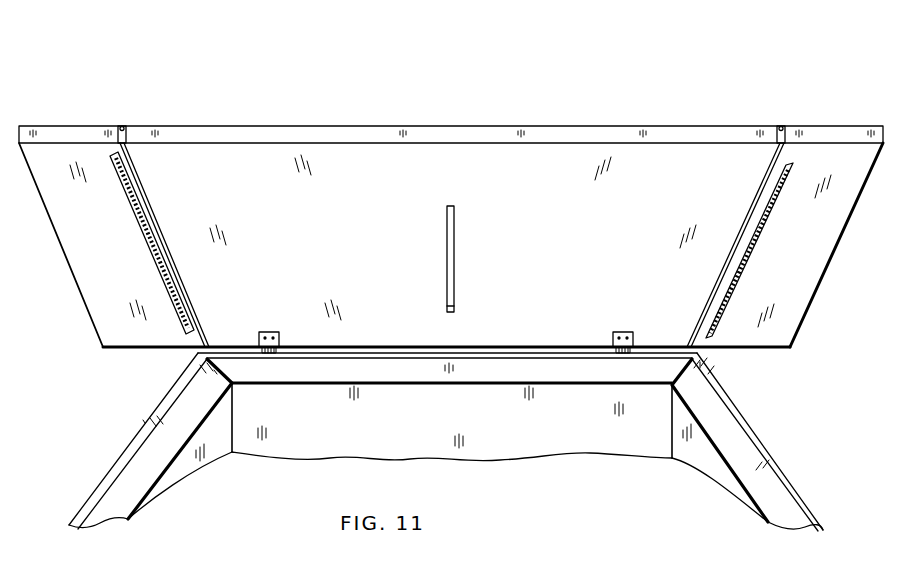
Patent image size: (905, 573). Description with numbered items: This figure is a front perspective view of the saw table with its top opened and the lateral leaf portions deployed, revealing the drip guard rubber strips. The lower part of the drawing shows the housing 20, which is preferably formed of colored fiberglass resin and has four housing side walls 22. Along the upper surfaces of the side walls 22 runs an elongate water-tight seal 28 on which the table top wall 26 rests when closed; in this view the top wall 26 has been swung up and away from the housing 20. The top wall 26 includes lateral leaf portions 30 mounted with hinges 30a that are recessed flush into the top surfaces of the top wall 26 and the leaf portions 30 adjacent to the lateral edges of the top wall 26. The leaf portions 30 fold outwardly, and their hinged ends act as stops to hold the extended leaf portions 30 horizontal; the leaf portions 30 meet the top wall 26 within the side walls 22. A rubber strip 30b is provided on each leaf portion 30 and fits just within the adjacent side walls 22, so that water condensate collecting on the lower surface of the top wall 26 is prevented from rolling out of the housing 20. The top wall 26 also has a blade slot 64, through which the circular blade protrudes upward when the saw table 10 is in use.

The display case 10 is at (142, 72).
The housing 20 is at (598, 444).
The housing side walls 22 is at (155, 432).
The table top wall 26 is at (325, 157).
The water-tight seal 28 is at (170, 393).
The lateral leaf portions 30 is at (68, 247).
The hinges 30a is at (122, 125).
The rubber strip 30b is at (159, 262).
The blade slot 64 is at (454, 255).